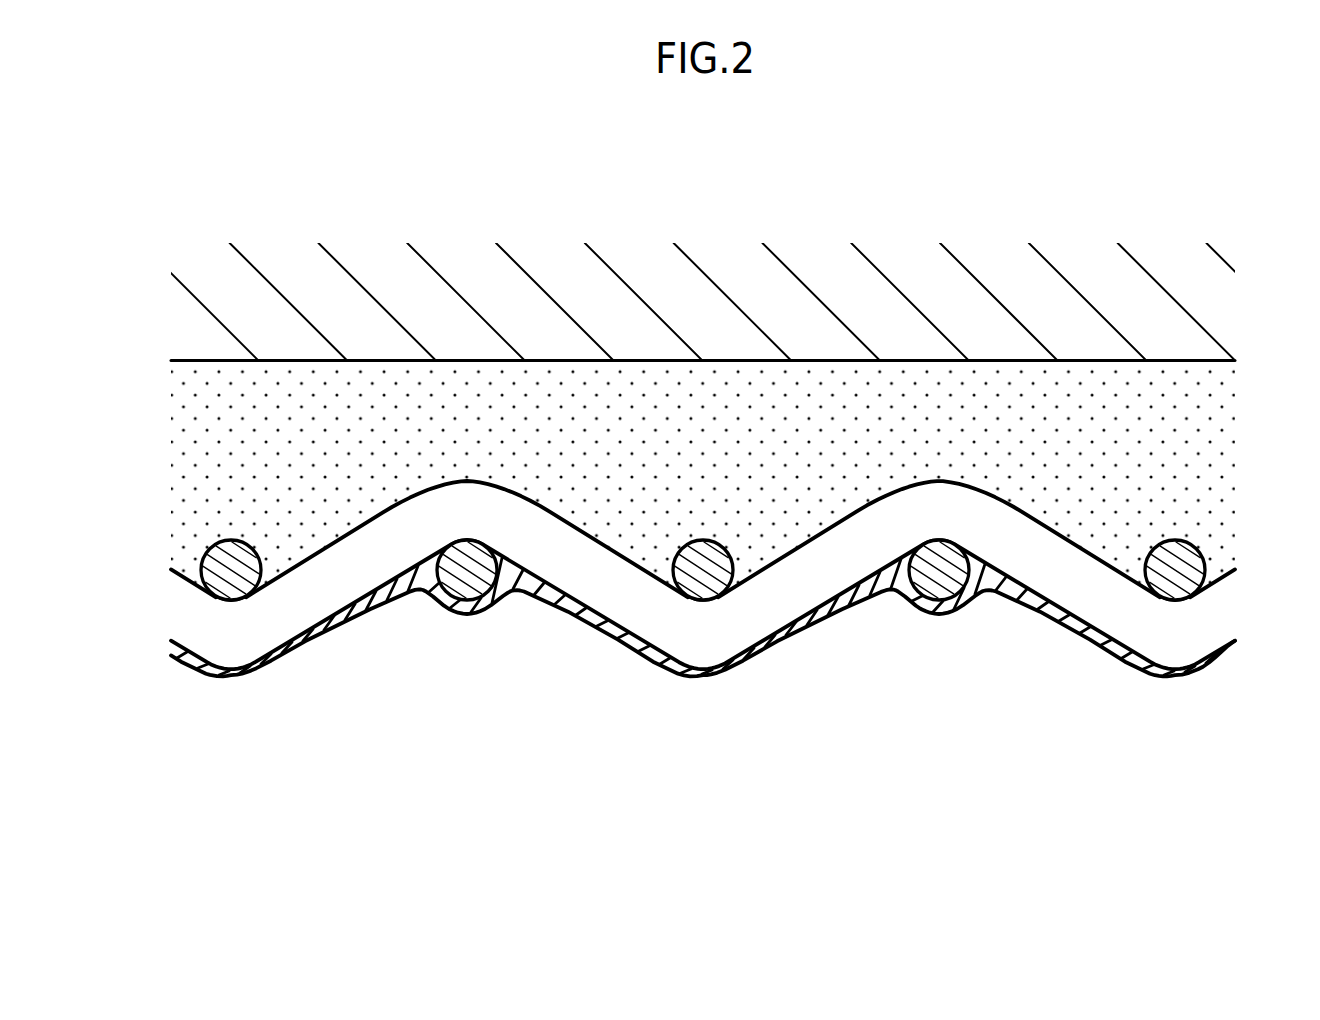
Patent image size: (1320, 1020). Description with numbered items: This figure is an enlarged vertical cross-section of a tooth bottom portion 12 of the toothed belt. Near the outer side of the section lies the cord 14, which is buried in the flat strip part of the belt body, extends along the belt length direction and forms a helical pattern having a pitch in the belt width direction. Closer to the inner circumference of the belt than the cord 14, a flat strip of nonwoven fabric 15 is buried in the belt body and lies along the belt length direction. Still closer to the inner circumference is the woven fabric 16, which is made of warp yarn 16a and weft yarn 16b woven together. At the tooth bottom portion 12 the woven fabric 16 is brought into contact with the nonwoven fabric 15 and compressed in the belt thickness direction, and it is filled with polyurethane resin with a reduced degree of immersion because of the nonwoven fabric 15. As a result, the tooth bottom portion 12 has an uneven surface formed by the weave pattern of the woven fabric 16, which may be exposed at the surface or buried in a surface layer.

The tooth bottom portion 12 is at (730, 499).
The cord 14 is at (732, 275).
The nonwoven fabric 15 is at (820, 502).
The woven fabric 16 is at (703, 658).
The warp yarn 16a is at (597, 720).
The weft yarn 16b is at (568, 560).